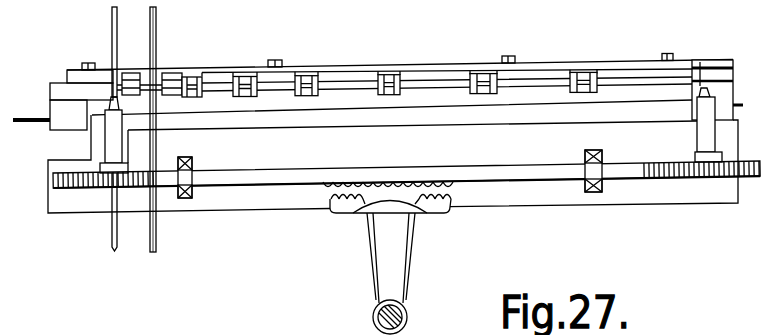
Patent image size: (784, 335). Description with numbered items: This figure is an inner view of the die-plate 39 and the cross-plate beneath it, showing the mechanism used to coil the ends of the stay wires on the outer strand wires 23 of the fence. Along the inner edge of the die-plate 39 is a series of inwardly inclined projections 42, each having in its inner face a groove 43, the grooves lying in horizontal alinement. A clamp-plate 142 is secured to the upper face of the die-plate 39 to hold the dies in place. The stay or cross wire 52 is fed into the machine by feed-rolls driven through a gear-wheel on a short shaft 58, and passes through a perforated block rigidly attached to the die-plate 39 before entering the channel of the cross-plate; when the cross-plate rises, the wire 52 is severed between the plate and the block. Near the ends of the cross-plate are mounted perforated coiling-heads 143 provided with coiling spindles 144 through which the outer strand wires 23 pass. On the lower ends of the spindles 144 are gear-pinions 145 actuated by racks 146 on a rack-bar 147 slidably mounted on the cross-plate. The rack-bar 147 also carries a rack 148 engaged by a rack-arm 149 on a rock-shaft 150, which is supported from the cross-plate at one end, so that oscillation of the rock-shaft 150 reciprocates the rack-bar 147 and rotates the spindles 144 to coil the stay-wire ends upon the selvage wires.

The strand wires 23 is at (116, 53).
The die-plate 39 is at (58, 88).
The inwardly inclined projections 42 is at (218, 77).
The grooves 43 is at (527, 82).
The cross wire 52 is at (23, 116).
The short shaft 58 is at (58, 130).
The clamp-plate 142 is at (435, 67).
The perforated coiling-heads 143 is at (115, 143).
The coiling spindles 144 is at (697, 87).
The gear-pinions 145 is at (713, 180).
The racks 146 is at (680, 181).
The rack-bar 147 is at (407, 196).
The rack 148 is at (357, 182).
The rack-arm 149 is at (395, 258).
The rock-shaft 150 is at (408, 313).